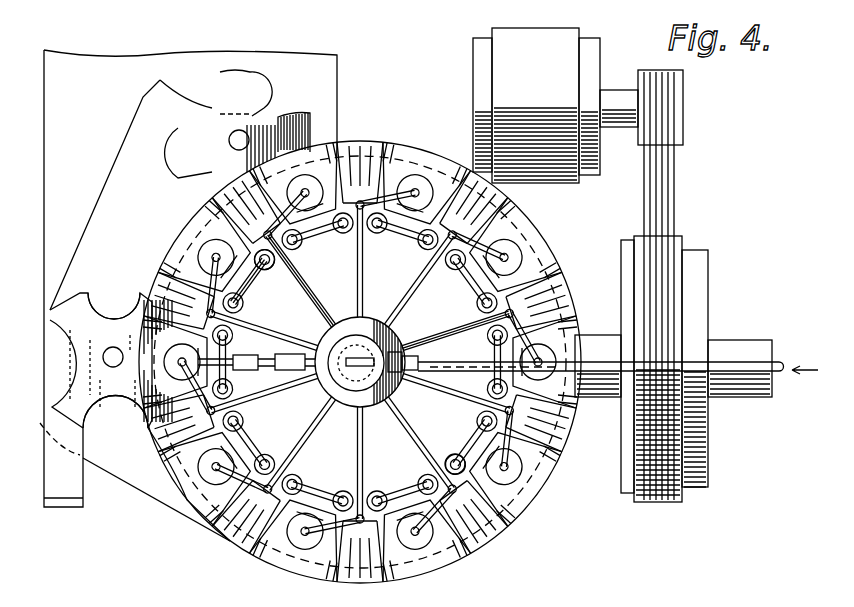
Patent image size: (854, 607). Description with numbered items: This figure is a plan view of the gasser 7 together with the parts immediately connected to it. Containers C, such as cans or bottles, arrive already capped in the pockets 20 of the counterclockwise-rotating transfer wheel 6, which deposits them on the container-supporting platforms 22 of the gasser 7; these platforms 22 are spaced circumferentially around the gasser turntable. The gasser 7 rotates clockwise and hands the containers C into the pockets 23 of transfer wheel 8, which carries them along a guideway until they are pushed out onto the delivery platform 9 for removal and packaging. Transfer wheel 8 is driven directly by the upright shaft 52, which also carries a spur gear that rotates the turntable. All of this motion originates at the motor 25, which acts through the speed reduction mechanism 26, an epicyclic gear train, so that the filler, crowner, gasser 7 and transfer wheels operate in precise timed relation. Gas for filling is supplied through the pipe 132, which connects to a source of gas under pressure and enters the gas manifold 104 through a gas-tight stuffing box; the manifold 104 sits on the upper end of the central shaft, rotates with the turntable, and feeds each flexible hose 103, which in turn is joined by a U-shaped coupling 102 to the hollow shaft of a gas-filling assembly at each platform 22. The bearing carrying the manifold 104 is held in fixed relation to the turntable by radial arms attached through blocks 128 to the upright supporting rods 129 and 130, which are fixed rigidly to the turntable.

The transfer wheel 6 is at (188, 295).
The gasser 7 is at (548, 456).
The transfer wheel 8 is at (86, 300).
The delivery platform 9 is at (82, 500).
The pockets 20 is at (290, 112).
The platforms 22 is at (214, 508).
The pockets 23 is at (114, 320).
The motor 25 is at (494, 72).
The speed reduction mechanism 26 is at (716, 273).
The upright shaft 52 is at (112, 349).
The U-shaped coupling 102 is at (360, 362).
The flexible hose 103 is at (440, 338).
The gas manifold 104 is at (322, 392).
The blocks 128 is at (246, 293).
The upright supporting rod 129 is at (248, 310).
The upright supporting rod 130 is at (276, 258).
The pipe 132 is at (358, 410).
The containers C is at (508, 264).